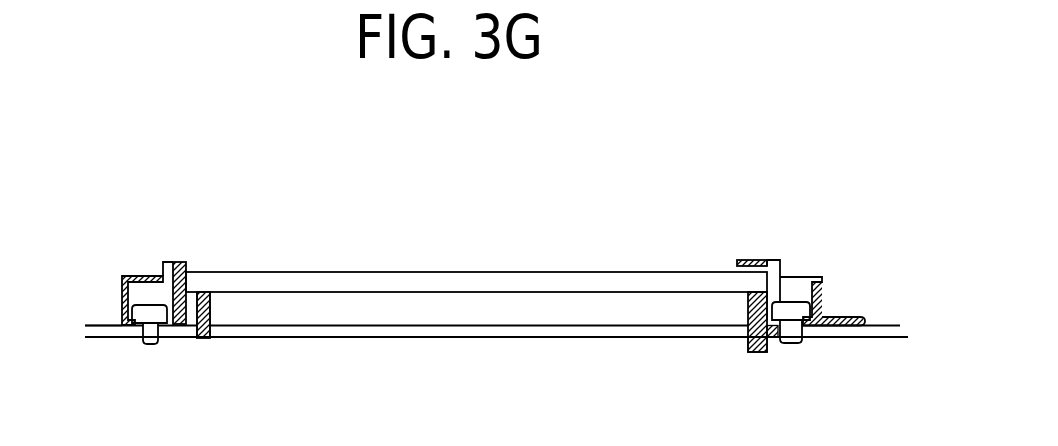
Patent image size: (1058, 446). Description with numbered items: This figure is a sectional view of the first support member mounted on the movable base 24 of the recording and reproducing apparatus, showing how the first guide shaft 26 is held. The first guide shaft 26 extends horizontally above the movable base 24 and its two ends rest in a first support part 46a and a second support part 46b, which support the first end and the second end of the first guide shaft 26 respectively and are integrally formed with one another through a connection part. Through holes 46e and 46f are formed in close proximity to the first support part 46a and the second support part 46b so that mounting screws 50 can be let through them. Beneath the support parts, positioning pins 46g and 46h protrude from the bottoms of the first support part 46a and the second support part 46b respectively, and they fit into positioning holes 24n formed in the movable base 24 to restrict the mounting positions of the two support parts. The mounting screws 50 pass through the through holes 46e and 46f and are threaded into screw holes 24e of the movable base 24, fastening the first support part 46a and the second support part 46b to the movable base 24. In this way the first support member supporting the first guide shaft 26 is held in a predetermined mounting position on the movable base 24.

The movable base 24 is at (562, 328).
The screw holes 24e is at (130, 343).
The positioning holes 24n is at (205, 343).
The first guide shaft 26 is at (538, 277).
The first support part 46a is at (752, 262).
The second support part 46b is at (183, 263).
The through hole 46e is at (785, 288).
The through hole 46f is at (138, 290).
The positioning pin 46g is at (757, 353).
The positioning pin 46h is at (207, 347).
The mounting screws 50 is at (152, 343).